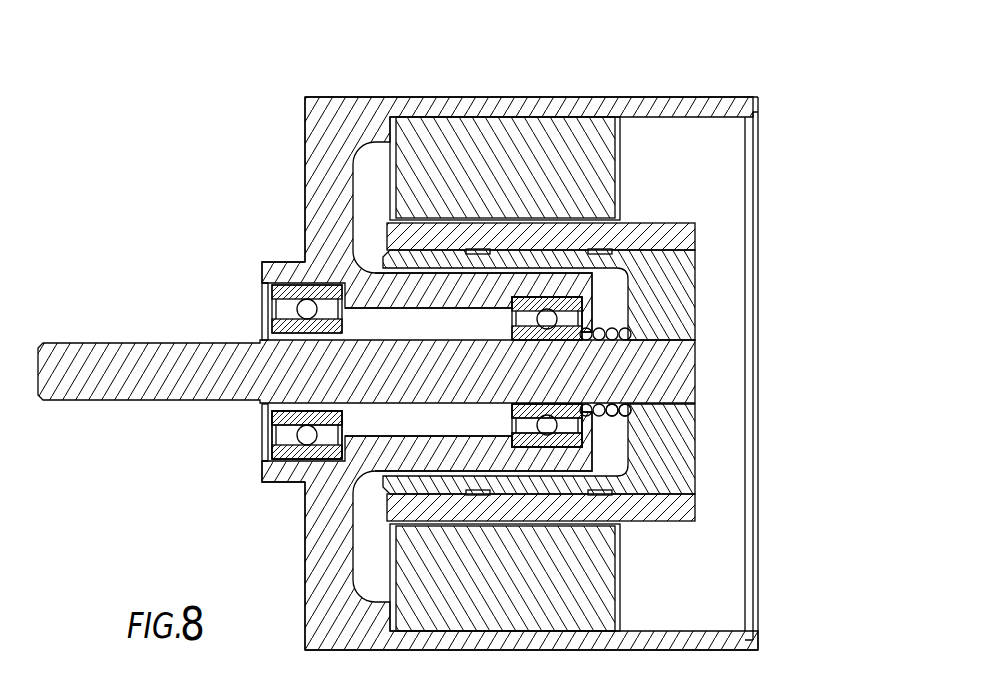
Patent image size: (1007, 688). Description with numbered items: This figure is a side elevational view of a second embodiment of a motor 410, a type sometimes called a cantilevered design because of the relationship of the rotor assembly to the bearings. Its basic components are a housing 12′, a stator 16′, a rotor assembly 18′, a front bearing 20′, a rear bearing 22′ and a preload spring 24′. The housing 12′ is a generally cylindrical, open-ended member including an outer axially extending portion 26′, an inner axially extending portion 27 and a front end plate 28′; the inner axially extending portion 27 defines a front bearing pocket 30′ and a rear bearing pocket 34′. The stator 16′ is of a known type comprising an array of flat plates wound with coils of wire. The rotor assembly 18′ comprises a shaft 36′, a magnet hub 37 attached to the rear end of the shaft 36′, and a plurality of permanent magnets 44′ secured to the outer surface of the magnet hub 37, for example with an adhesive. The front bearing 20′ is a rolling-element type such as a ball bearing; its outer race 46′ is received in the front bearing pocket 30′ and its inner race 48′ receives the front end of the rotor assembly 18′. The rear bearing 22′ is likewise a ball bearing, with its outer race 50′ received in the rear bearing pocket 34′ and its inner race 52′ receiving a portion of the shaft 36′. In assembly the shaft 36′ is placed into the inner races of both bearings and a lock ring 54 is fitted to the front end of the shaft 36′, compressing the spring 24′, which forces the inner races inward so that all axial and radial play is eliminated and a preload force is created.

The motor 410 is at (470, 78).
The housing 12′ is at (330, 97).
The outer axially extending portion 26′ is at (642, 97).
The front end plate 28′ is at (305, 193).
The rotor assembly 18′ is at (707, 212).
The stator 16′ is at (612, 157).
The permanent magnets 44′ is at (652, 222).
The magnet hub 37 is at (697, 327).
The front bearing pocket 30′ is at (292, 272).
The lock ring 54 is at (262, 322).
The inner axially extending portion 27 is at (430, 308).
The shaft 36′ is at (147, 404).
The outer race 46′ is at (268, 443).
The front bearing 20′ is at (258, 437).
The inner race 48′ is at (342, 420).
The rear bearing 22′ is at (587, 312).
The inner race 52′ is at (517, 414).
The rear bearing pocket 34′ is at (555, 437).
The preload spring 24′ is at (577, 445).
The outer race 50′ is at (611, 416).